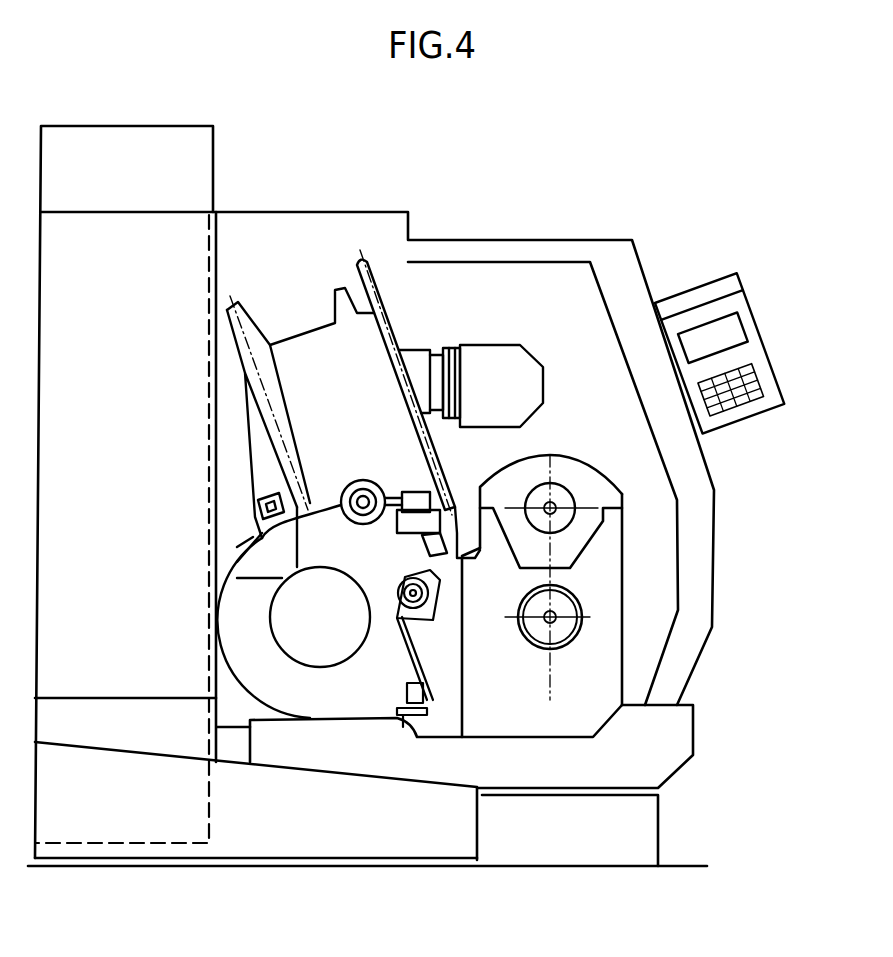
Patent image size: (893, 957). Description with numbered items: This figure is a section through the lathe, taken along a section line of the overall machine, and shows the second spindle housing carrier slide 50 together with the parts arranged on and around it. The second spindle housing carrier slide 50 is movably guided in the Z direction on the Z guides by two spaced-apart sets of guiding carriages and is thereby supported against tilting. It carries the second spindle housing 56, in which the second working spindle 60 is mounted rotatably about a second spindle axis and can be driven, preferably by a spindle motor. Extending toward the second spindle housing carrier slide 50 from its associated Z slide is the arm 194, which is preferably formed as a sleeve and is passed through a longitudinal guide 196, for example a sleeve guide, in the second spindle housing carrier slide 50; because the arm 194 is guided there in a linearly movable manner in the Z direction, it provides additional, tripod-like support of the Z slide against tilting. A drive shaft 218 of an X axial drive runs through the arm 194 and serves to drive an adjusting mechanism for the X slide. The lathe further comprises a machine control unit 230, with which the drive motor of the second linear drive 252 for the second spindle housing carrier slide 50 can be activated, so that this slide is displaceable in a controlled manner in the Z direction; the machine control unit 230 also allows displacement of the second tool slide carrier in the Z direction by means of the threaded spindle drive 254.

The second spindle housing carrier slide 50 is at (592, 709).
The second spindle housing 56 is at (593, 483).
The second working spindle 60 is at (580, 523).
The arm 194 is at (550, 650).
The longitudinal guide 196 is at (582, 627).
The drive shaft 218 is at (580, 603).
The machine control unit 230 is at (698, 278).
The second linear drive 252 is at (383, 580).
The threaded spindle drive 254 is at (340, 528).